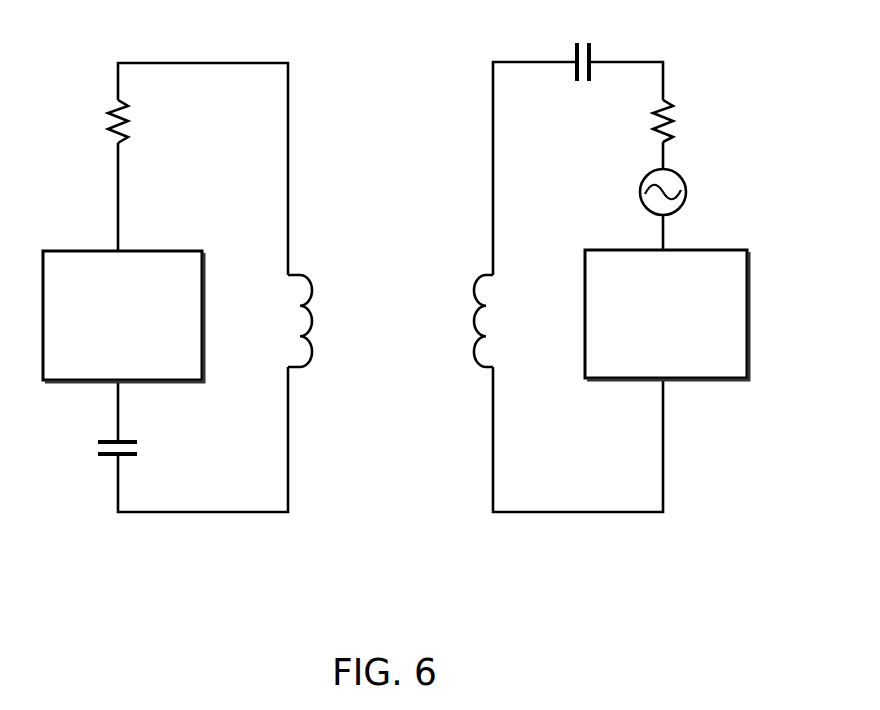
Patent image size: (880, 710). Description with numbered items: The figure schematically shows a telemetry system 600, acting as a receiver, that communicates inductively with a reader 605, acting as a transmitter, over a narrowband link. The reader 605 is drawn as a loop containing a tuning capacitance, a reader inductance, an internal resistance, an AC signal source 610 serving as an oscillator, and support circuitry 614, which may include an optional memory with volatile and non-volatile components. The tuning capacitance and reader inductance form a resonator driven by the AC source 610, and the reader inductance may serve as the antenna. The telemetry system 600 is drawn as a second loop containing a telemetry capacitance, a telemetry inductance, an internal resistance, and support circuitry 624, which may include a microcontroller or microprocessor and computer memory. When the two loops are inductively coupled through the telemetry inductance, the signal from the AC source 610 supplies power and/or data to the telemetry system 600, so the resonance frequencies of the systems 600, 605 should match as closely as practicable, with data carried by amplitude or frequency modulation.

The telemetry system 600 is at (203, 322).
The reader 605 is at (621, 297).
The AC signal source 610 is at (670, 172).
The support circuitry 614 is at (645, 351).
The support circuitry 624 is at (99, 351).